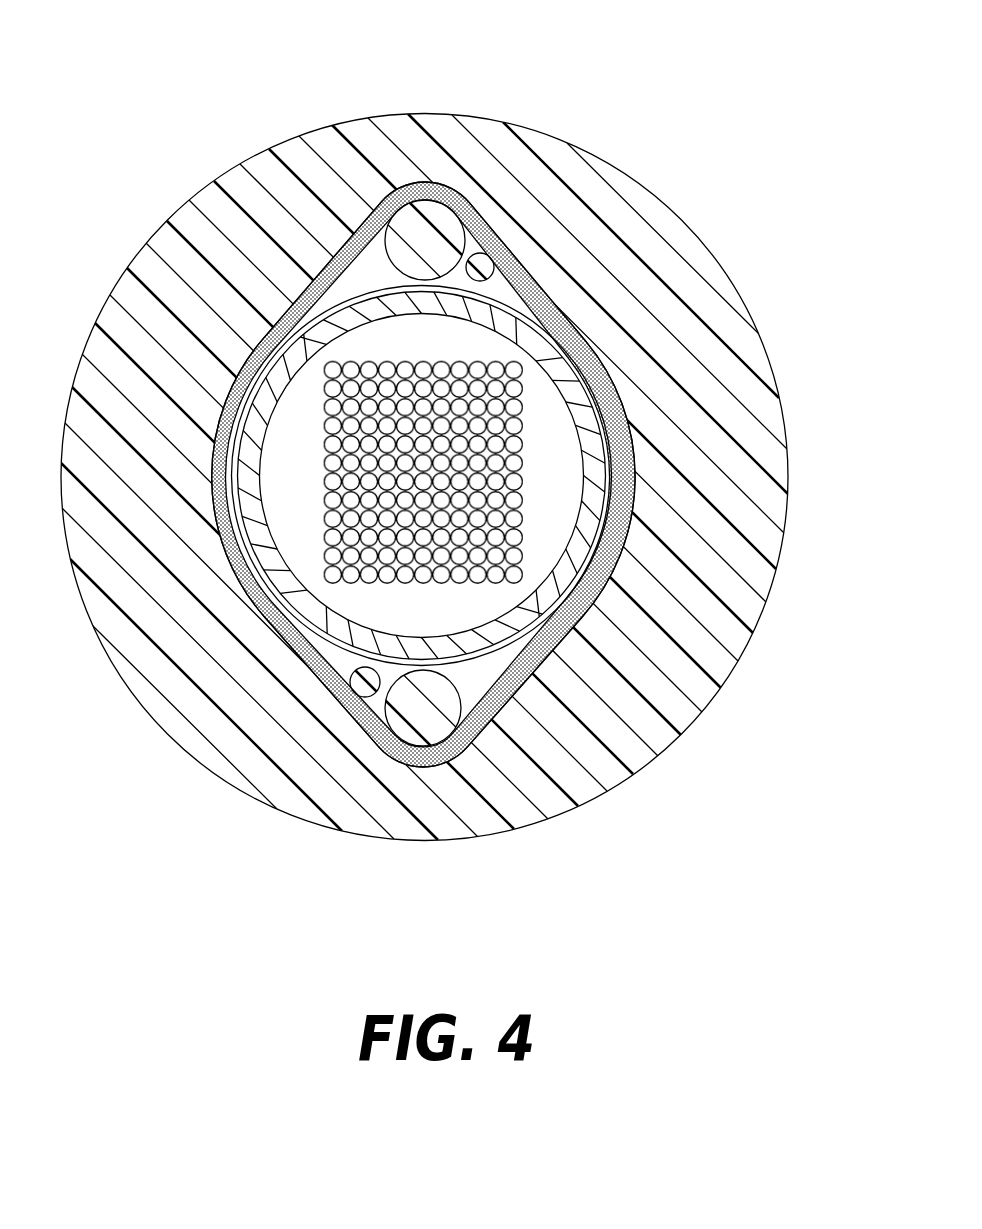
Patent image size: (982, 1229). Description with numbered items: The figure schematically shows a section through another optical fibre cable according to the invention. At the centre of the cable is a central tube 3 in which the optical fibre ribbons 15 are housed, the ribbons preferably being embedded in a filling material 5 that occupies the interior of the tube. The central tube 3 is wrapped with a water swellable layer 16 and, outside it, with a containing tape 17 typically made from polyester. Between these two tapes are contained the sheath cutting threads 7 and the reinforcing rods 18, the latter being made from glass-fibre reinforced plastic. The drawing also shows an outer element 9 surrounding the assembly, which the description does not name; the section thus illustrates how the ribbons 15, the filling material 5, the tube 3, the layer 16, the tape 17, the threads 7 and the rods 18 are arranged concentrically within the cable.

The central tube 3 is at (513, 690).
The filling material 5 is at (548, 523).
The sheath cutting threads 7 is at (486, 266).
The outer sheath 9 is at (784, 470).
The optical fibre ribbons 15 is at (337, 505).
The water swellable layer 16 is at (364, 292).
The containing tape 17 is at (304, 289).
The reinforcing rods 18 is at (455, 672).